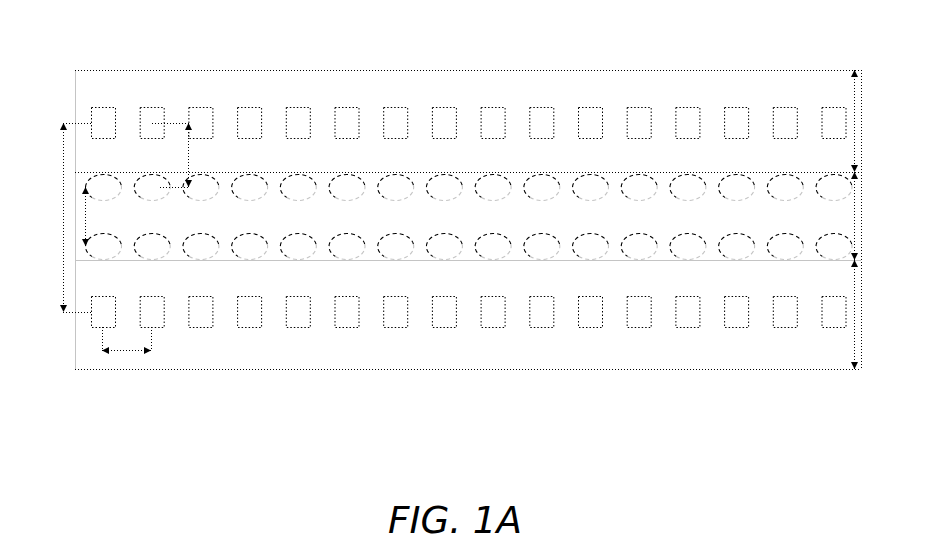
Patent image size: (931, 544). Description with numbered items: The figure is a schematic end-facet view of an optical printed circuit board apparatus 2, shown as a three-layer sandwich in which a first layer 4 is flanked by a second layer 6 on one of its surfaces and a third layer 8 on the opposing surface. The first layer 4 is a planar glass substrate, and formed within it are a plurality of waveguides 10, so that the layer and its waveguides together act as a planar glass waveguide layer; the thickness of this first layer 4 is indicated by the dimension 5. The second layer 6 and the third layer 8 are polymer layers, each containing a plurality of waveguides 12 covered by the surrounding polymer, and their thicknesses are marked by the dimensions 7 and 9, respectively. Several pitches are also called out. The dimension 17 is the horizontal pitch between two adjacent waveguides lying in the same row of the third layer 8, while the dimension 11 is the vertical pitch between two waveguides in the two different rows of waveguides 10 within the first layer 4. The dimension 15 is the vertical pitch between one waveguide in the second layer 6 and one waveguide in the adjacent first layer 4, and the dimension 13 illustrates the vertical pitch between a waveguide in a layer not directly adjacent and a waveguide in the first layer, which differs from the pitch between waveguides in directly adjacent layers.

The apparatus 2 is at (282, 56).
The first layer 4 is at (372, 224).
The dimension 5 is at (841, 216).
The second layer 6 is at (431, 104).
The dimension 7 is at (846, 121).
The third layer 8 is at (390, 360).
The dimension 9 is at (841, 314).
The waveguides 10 is at (638, 247).
The dimension 11 is at (97, 216).
The waveguides 12 is at (541, 106).
The dimension 13 is at (67, 218).
The dimension 15 is at (183, 155).
The dimension 17 is at (127, 348).